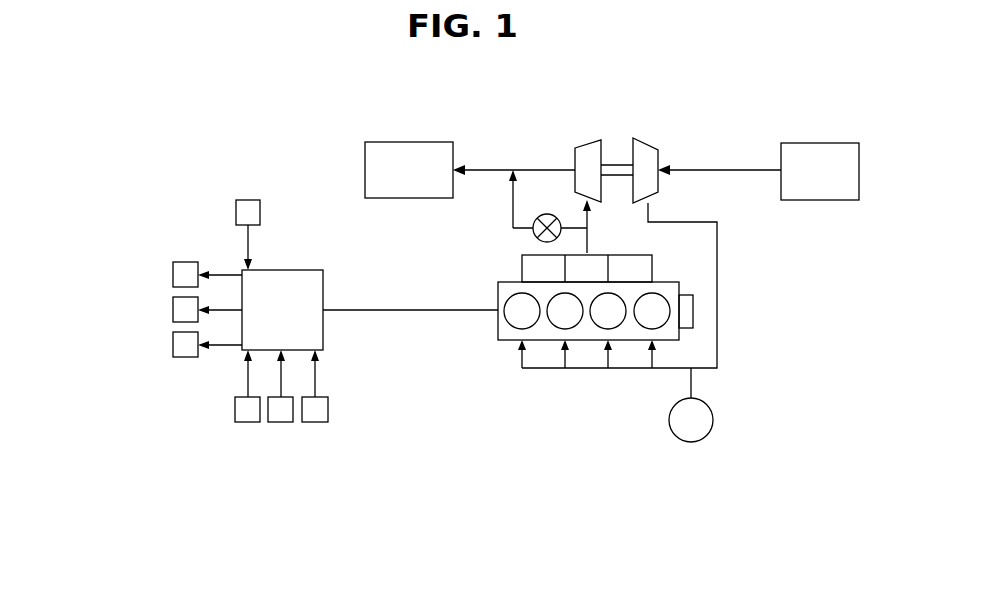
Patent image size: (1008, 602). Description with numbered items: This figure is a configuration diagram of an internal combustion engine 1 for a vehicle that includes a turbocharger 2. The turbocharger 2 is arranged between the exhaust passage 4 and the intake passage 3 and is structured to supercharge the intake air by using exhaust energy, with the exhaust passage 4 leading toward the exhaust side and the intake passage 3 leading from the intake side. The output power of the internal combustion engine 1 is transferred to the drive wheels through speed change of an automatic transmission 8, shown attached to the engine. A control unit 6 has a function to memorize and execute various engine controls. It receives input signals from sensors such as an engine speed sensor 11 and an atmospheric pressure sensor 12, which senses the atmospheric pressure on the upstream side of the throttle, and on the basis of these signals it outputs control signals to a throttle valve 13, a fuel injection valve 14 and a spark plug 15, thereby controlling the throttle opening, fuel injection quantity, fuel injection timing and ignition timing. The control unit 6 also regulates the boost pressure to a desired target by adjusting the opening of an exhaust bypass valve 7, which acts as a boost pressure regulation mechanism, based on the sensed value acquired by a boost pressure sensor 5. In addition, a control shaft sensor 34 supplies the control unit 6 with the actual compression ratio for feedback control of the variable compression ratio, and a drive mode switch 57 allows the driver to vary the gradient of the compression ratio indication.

The internal combustion engine 1 is at (483, 330).
The turbocharger 2 is at (590, 140).
The intake passage 3 is at (720, 170).
The exhaust passage 4 is at (482, 170).
The boost pressure sensor 5 is at (691, 442).
The control unit 6 is at (282, 270).
The exhaust bypass valve 7 is at (531, 238).
The automatic transmission 8 is at (693, 313).
The engine speed sensor 11 is at (248, 422).
The atmospheric pressure sensor 12 is at (281, 422).
The throttle valve 13 is at (173, 340).
The fuel injection valve 14 is at (173, 305).
The spark plug 15 is at (173, 270).
The control shaft sensor 34 is at (315, 422).
The drive mode switch 57 is at (248, 200).